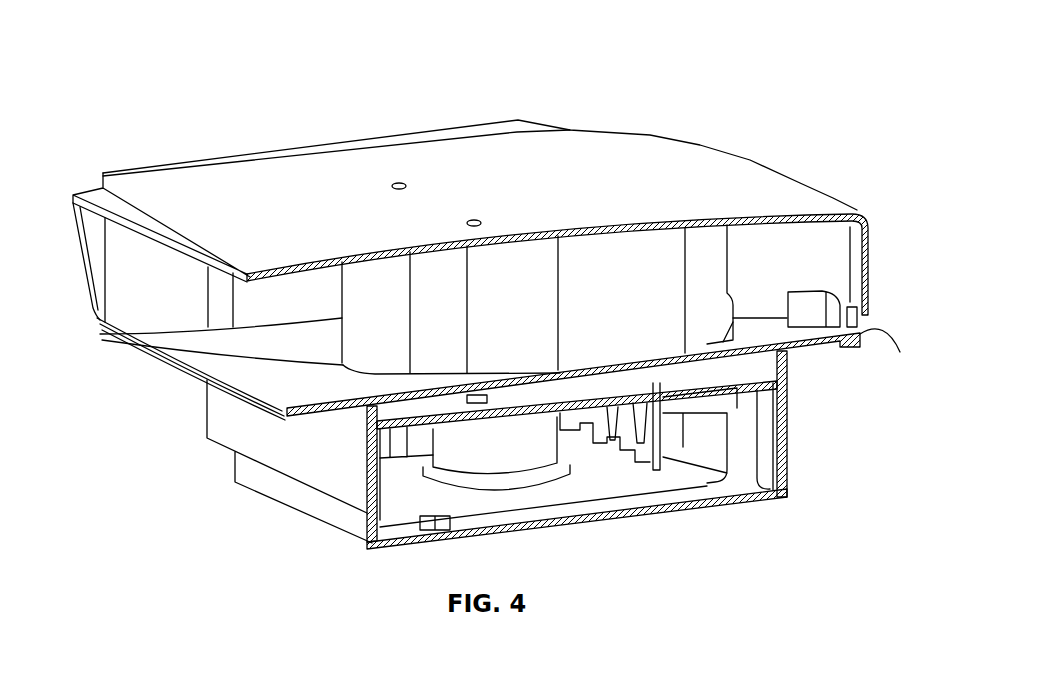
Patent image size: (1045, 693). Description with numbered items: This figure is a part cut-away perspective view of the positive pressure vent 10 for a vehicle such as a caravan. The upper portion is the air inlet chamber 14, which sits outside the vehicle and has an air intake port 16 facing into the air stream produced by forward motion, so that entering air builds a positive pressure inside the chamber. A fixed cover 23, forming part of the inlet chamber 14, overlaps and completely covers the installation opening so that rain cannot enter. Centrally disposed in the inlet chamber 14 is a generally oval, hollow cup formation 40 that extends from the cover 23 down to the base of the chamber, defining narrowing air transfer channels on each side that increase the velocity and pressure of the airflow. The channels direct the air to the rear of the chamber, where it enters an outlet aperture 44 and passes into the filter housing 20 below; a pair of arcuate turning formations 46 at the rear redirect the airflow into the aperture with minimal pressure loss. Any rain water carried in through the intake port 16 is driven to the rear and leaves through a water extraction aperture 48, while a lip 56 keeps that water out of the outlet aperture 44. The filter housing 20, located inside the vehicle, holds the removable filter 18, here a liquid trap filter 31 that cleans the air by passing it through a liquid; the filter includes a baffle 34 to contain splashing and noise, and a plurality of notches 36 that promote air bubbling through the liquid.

The positive pressure vent 10 is at (273, 173).
The air inlet chamber 14 is at (828, 243).
The air intake port 16 is at (80, 252).
The removable filter 18 is at (440, 530).
The filter housing 20 is at (783, 480).
The fixed cover 23 is at (177, 197).
The liquid trap filter 31 is at (543, 506).
The baffle 34 is at (377, 430).
The notches 36 is at (637, 453).
The cup formation 40 is at (370, 338).
The outlet aperture 44 is at (728, 253).
The arcuate turning formations 46 is at (828, 302).
The water extraction aperture 48 is at (900, 352).
The lip 56 is at (735, 305).